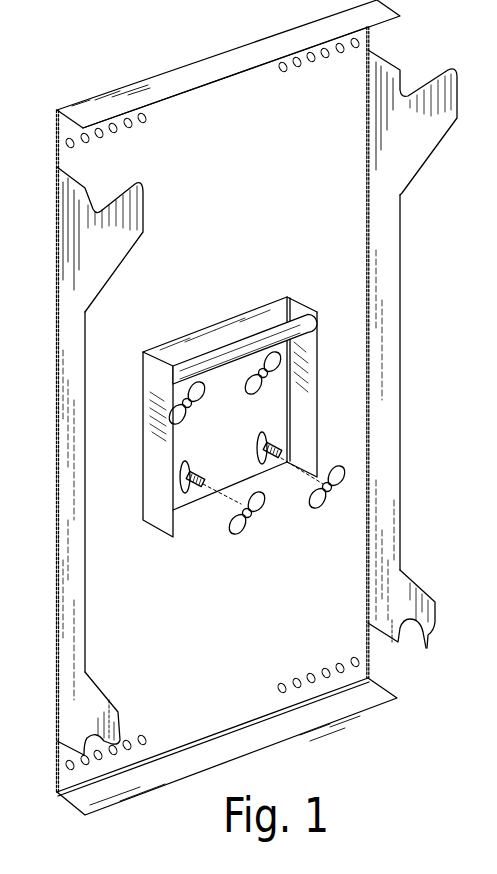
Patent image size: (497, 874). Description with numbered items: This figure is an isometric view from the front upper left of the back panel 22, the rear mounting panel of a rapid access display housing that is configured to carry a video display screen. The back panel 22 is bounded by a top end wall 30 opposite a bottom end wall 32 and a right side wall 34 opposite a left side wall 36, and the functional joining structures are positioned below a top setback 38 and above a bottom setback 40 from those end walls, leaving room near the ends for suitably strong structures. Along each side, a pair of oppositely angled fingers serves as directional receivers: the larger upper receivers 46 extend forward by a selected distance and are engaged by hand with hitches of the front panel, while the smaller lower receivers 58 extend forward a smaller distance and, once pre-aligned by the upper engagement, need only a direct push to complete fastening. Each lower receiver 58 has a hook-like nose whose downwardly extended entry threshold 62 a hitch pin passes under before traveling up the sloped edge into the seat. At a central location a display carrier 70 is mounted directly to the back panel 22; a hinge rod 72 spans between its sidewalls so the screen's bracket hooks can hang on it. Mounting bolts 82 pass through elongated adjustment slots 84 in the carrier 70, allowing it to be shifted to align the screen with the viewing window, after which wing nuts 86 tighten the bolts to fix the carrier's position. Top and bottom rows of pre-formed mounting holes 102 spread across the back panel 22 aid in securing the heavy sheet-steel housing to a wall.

The back panel 22 is at (456, 338).
The top end wall 30 is at (248, 67).
The bottom end wall 32 is at (228, 737).
The right side wall 34 is at (366, 641).
The left side wall 36 is at (57, 750).
The top setback 38 is at (225, 106).
The bottom setback 40 is at (192, 700).
The upper receiver 46 is at (118, 248).
The lower receiver 58 is at (77, 717).
The entry threshold 62 is at (428, 631).
The display carrier 70 is at (220, 327).
The hinge rod 72 is at (304, 322).
The mounting bolts 82 is at (183, 478).
The elongated adjustment slots 84 is at (193, 467).
The wing nuts 86 is at (322, 498).
The mounting holes 102 is at (128, 125).